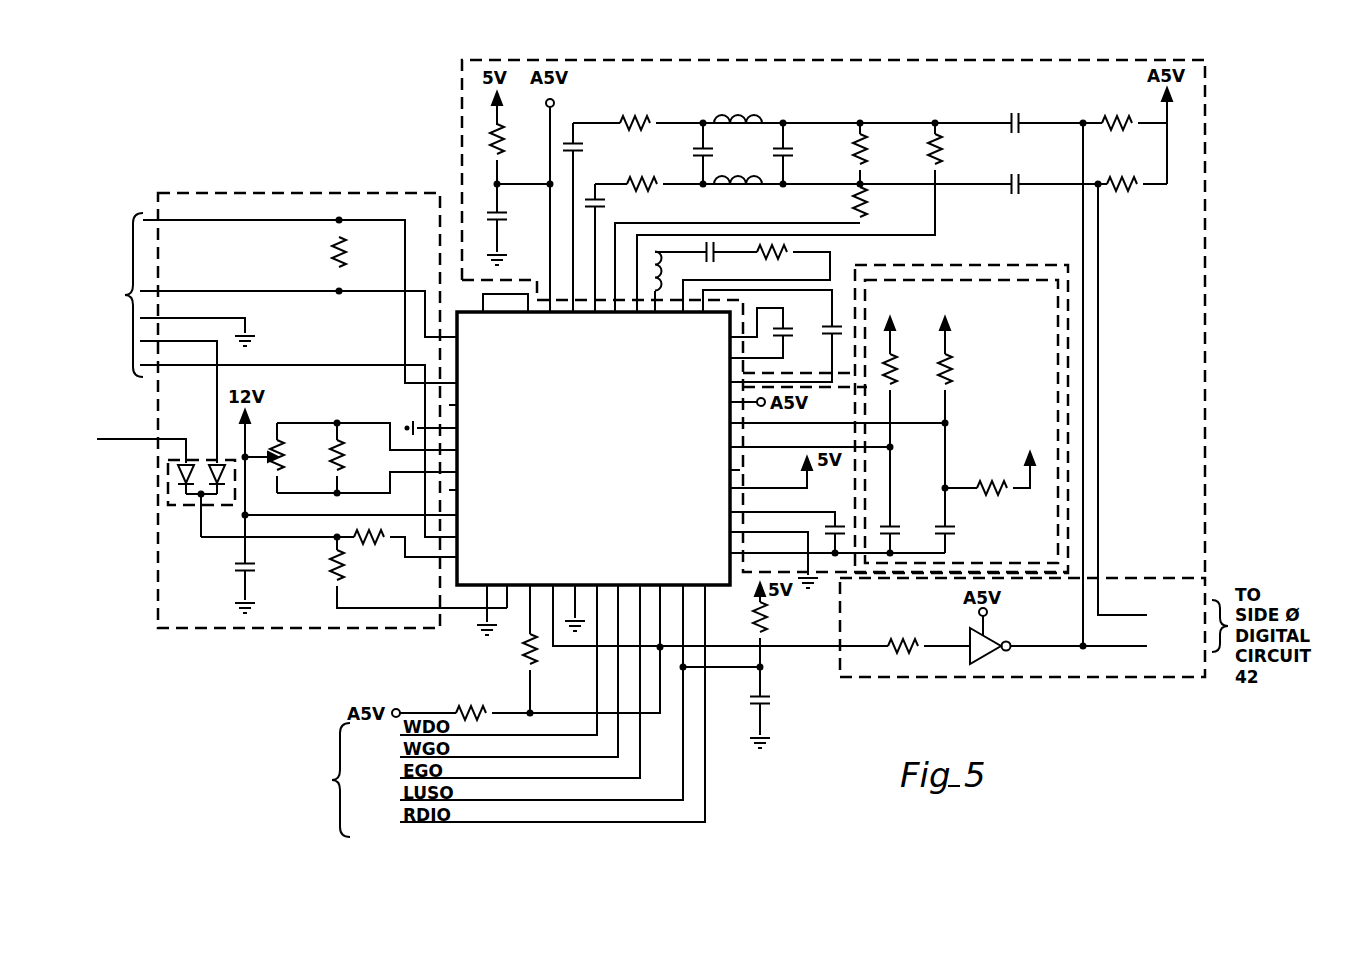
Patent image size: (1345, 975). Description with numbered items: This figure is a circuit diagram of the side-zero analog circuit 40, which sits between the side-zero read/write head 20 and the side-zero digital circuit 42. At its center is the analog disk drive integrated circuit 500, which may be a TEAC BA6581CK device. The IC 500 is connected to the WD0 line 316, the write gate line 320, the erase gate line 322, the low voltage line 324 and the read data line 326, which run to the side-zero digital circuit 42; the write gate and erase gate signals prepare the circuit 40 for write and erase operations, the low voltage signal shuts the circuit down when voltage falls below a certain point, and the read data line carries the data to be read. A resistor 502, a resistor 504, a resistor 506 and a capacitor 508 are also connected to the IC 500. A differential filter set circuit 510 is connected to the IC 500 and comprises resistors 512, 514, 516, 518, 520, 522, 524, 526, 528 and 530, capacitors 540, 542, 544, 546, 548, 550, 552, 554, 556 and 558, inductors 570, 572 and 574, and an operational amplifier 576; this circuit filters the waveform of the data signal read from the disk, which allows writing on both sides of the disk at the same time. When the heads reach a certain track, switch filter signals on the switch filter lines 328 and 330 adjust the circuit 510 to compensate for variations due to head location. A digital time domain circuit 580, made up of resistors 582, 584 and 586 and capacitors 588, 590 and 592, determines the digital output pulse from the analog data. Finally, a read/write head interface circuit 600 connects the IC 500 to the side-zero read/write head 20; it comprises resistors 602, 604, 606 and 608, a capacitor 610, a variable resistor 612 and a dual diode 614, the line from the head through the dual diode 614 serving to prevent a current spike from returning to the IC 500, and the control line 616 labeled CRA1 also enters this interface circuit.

The analog disk drive integrated circuit 500 is at (604, 476).
The differential filter set circuit 510 is at (783, 60).
The resistor 512 is at (518, 138).
The capacitor 540 is at (514, 224).
The capacitor 542 is at (592, 217).
The capacitor 544 is at (616, 248).
The resistor 514 is at (638, 110).
The resistor 516 is at (654, 169).
The inductor 570 is at (738, 105).
The inductor 572 is at (738, 195).
The capacitor 546 is at (723, 153).
The capacitor 548 is at (802, 153).
The resistor 518 is at (881, 153).
The resistor 520 is at (811, 217).
The resistor 522 is at (763, 248).
The capacitor 550 is at (1015, 110).
The capacitor 552 is at (1030, 170).
The resistor 526 is at (1120, 108).
The resistor 528 is at (1121, 169).
The inductor 574 is at (680, 282).
The capacitor 554 is at (732, 261).
The resistor 524 is at (756, 278).
The capacitor 558 is at (772, 336).
The capacitor 556 is at (777, 334).
The digital time domain circuit 580 is at (1017, 405).
The resistor 582 is at (908, 421).
The resistor 584 is at (964, 421).
The resistor 586 is at (989, 473).
The capacitor 588 is at (803, 532).
The capacitor 590 is at (906, 532).
The capacitor 592 is at (964, 532).
The resistor 502 is at (528, 652).
The resistor 504 is at (549, 651).
The resistor 506 is at (781, 627).
The capacitor 508 is at (782, 707).
The WD0 line 316 is at (474, 667).
The write gate line 320 is at (485, 677).
The erase gate line 322 is at (496, 688).
The low voltage line 324 is at (517, 699).
The read data line 326 is at (528, 710).
The switch filter line 328 is at (1149, 614).
The switch filter line 330 is at (1148, 640).
The side-zero analog circuit 40 is at (1093, 688).
The side-zero digital circuit 42 is at (297, 781).
The side-zero transducer head 20 is at (96, 295).
The resistor 530 is at (927, 631).
The operational amplifier 576 is at (1058, 636).
The read/write head interface circuit 600 is at (312, 193).
The resistor 602 is at (359, 256).
The resistor 604 is at (357, 458).
The resistor 606 is at (329, 551).
The resistor 608 is at (395, 572).
The capacitor 610 is at (232, 571).
The variable resistor 612 is at (284, 458).
The dual diode 614 is at (165, 496).
The CRA1 control line 616 is at (98, 439).